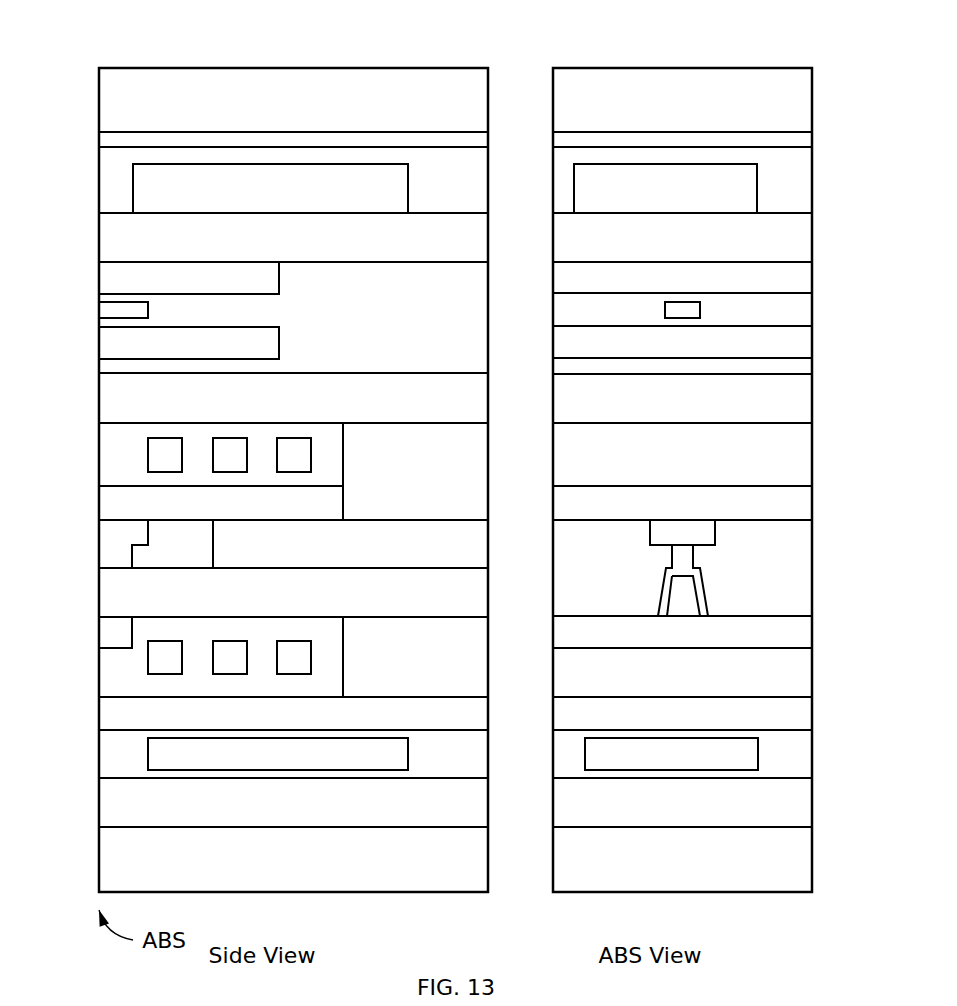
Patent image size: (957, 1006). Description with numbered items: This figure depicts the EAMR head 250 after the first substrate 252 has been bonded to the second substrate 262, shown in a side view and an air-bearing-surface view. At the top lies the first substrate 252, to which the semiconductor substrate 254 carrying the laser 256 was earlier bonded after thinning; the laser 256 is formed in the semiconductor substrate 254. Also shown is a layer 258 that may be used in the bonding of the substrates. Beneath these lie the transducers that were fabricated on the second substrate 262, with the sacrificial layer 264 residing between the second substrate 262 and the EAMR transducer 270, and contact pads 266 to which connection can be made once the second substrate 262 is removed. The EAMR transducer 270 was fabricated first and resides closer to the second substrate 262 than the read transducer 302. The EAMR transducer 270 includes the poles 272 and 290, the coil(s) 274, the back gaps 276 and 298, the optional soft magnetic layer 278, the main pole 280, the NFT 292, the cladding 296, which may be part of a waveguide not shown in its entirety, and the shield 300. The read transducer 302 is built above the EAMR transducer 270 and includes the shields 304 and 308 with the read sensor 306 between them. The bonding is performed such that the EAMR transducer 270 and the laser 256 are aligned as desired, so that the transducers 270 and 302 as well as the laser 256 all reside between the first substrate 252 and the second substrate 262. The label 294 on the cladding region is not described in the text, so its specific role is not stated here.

The EAMR head 250 is at (435, 31).
The first substrate 252 is at (530, 98).
The semiconductor substrate 254 is at (530, 162).
The laser 256 is at (408, 172).
The layer 258 is at (99, 221).
The second substrate 262 is at (488, 877).
The sacrificial layer 264 is at (488, 813).
The contact pads 266 is at (408, 762).
The EAMR transducer 270 is at (845, 521).
The pole 272 is at (488, 705).
The coil(s) 274 is at (120, 455).
The back gap 276 is at (488, 653).
The optional soft magnetic layer 278 is at (845, 670).
The main pole 280 is at (99, 643).
The pole 290 is at (488, 535).
The NFT 292 is at (99, 550).
The cladding 294 is at (99, 537).
The cladding 296 is at (99, 495).
The back gap 298 is at (488, 487).
The shield 300 is at (488, 390).
The read transducer 302 is at (843, 311).
The shield 304 is at (99, 333).
The read sensor 306 is at (99, 317).
The shield 308 is at (99, 263).